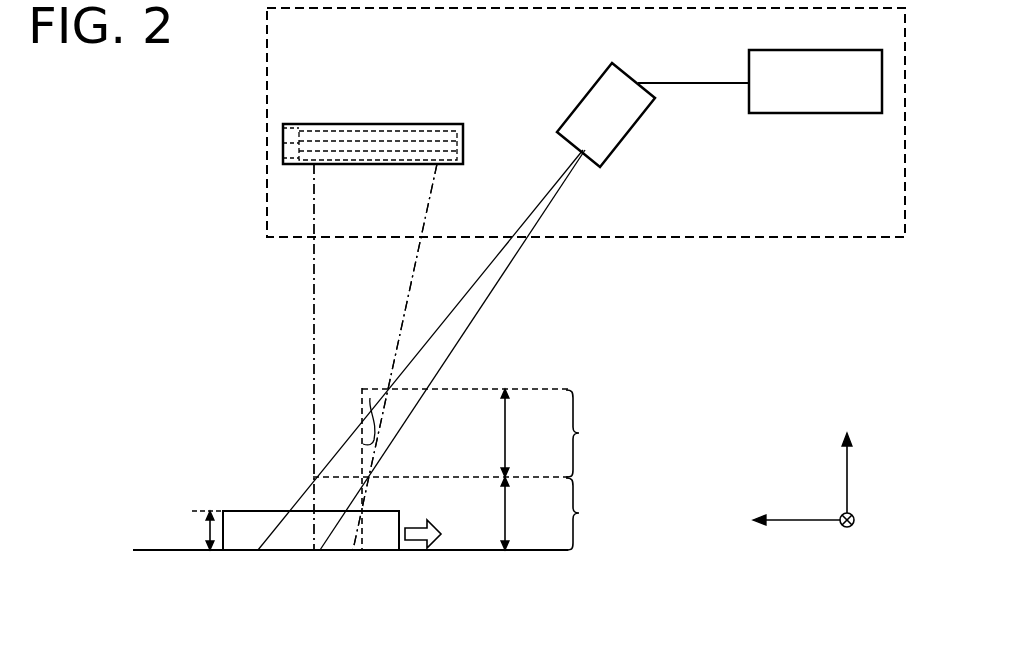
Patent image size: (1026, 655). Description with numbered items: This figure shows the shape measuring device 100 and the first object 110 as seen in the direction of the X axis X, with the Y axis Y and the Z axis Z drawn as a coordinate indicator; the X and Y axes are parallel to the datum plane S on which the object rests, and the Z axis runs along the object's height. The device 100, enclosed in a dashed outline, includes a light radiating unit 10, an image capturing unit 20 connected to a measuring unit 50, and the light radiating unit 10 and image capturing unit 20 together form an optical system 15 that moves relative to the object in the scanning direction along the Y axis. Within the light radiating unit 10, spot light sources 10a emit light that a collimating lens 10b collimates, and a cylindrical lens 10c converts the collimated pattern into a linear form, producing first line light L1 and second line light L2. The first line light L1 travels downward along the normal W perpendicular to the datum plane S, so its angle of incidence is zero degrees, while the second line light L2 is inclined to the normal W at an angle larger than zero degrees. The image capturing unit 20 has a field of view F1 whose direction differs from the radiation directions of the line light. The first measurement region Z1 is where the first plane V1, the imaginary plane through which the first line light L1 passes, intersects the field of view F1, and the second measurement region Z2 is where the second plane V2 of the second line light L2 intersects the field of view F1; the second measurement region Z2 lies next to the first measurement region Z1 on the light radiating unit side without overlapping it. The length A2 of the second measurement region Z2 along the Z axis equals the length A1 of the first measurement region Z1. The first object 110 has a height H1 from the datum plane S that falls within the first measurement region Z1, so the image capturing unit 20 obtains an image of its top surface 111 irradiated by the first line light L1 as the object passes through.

The light radiating unit 10 is at (447, 124).
The spot light sources 10a is at (283, 128).
The collimating lens 10b is at (283, 143).
The cylindrical lens 10c is at (283, 158).
The optical system 15 is at (426, 82).
The image capturing unit 20 is at (568, 120).
The measuring unit 50 is at (793, 113).
The shape measuring device 100 is at (763, 239).
The first object 110 is at (238, 505).
The surface 111 is at (272, 510).
The first line light L1 is at (313, 259).
The second line light L2 is at (412, 283).
The first plane V1 is at (313, 303).
The second plane V2 is at (405, 303).
The field of view F1 is at (455, 332).
The normal W is at (368, 412).
The height H1 is at (198, 530).
The length of the first measurement region A1 is at (440, 513).
The length of the second measurement region A2 is at (465, 433).
The first measurement region Z1 is at (590, 514).
The second measurement region Z2 is at (590, 433).
The datum plane S is at (170, 549).
The X axis X is at (847, 534).
The Y axis Y is at (785, 520).
The Z axis Z is at (847, 458).